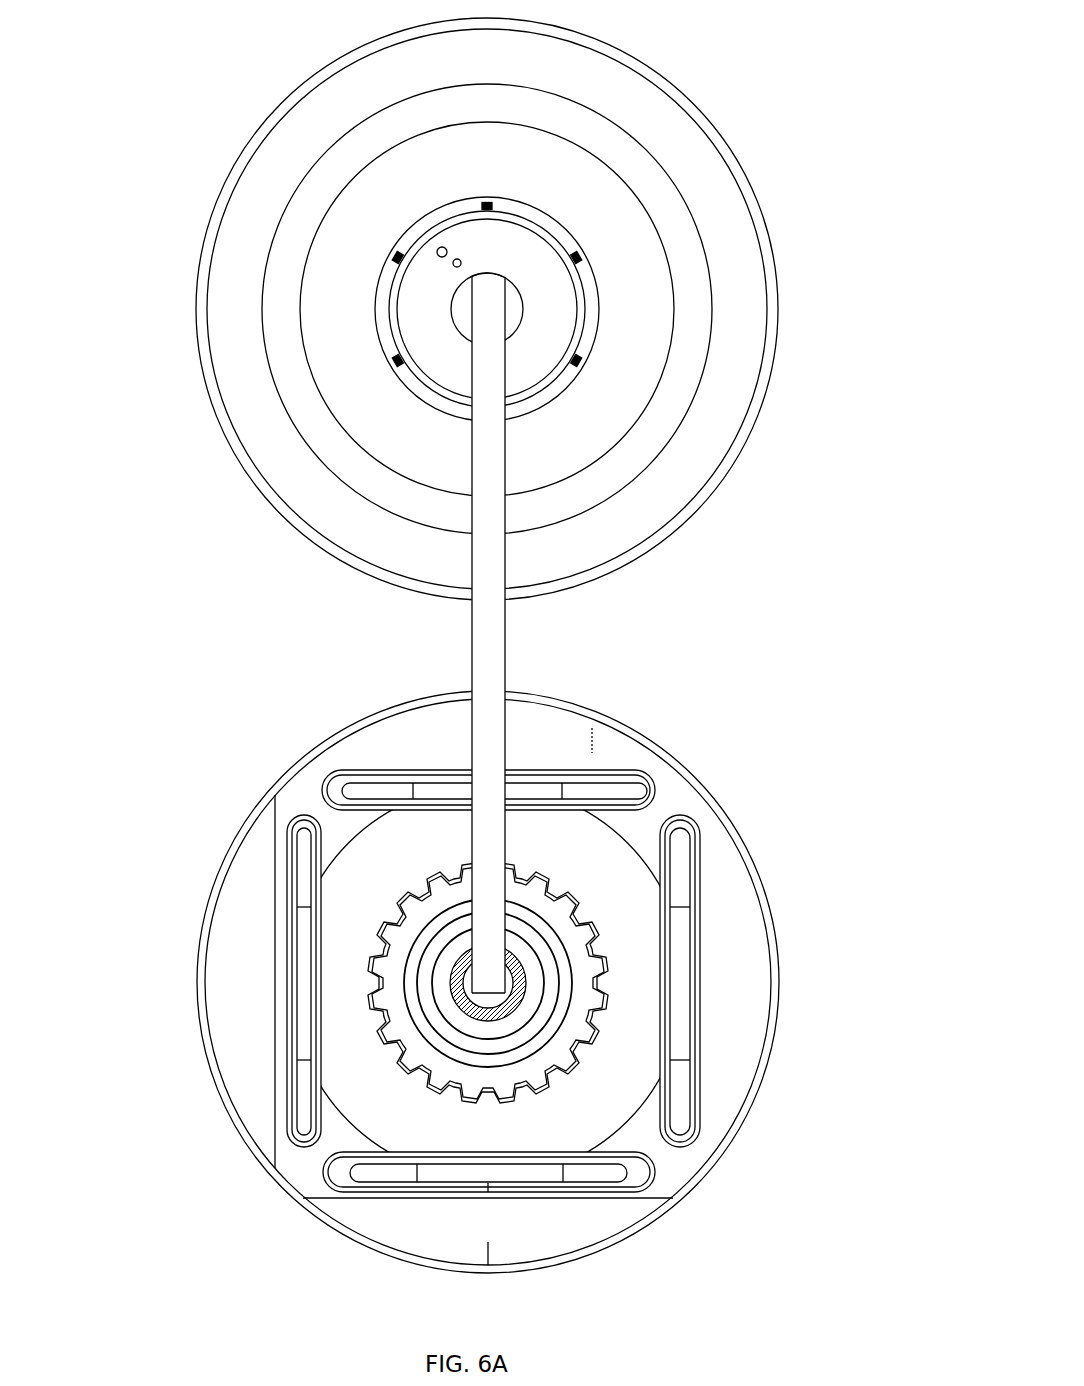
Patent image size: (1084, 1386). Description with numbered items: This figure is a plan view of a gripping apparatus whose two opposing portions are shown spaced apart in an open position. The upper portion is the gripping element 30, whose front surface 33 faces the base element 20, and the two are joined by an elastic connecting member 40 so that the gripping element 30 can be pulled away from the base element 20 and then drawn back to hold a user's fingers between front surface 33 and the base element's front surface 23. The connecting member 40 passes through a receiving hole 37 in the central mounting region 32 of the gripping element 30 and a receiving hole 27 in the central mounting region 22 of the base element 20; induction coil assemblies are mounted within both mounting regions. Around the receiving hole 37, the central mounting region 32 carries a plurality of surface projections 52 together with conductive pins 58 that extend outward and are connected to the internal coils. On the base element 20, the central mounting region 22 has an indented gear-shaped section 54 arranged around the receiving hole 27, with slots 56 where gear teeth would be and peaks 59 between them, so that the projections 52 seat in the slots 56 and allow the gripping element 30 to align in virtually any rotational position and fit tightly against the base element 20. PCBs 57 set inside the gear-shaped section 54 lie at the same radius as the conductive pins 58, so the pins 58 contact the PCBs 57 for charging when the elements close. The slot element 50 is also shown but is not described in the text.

The base element 20 is at (503, 983).
The central mounting region 22 is at (598, 863).
The front surface 23 is at (240, 982).
The receiving hole 27 is at (503, 997).
The gripping element 30 is at (495, 300).
The central mounting region 32 is at (560, 310).
The front surface 33 is at (230, 310).
The receiving hole 37 is at (460, 312).
The connecting member 40 is at (490, 653).
The right slot 50 is at (680, 982).
The surface projections 52 is at (492, 207).
The indented gear-shaped section 54 is at (577, 948).
The slots 56 is at (570, 1048).
The PCBs 57 is at (413, 957).
The conductive pins 58 is at (440, 247).
The peaks 59 is at (417, 1063).